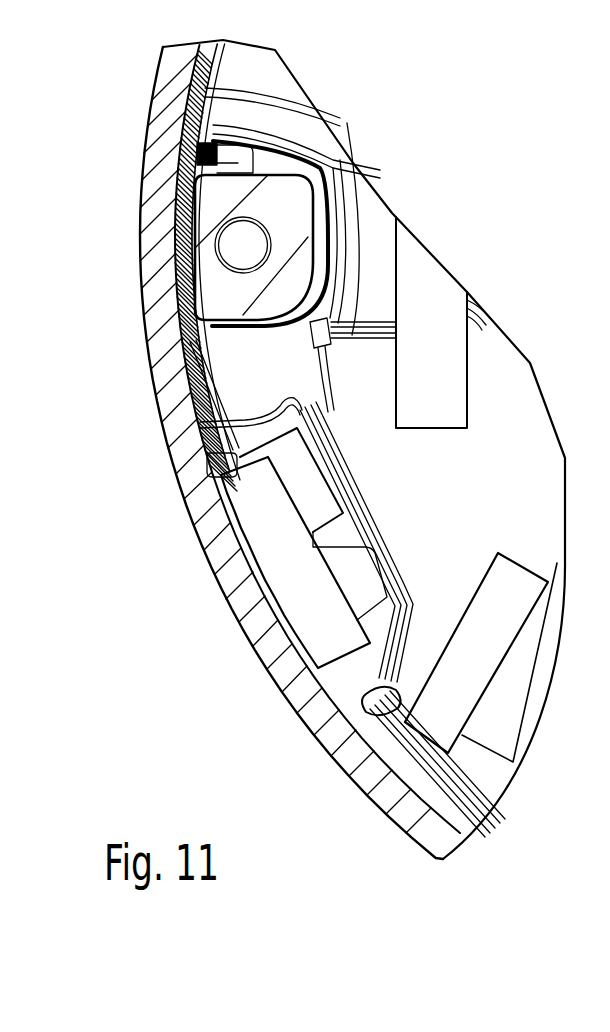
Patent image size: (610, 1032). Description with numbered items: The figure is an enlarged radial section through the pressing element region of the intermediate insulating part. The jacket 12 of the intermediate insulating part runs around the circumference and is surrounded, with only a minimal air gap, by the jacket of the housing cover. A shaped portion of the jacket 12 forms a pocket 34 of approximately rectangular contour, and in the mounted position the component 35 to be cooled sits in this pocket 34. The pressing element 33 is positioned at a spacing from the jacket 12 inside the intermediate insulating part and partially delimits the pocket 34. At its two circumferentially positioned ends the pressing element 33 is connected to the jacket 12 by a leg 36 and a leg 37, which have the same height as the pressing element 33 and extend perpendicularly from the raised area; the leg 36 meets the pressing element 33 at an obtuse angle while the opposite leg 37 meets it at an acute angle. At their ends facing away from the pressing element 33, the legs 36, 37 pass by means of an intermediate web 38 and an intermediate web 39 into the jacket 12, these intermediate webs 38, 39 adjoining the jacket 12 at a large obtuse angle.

The jacket 12 is at (180, 245).
The pressing element 33 is at (380, 553).
The pocket 34 is at (310, 503).
The component to be cooled 35 is at (285, 540).
The leg 36 is at (403, 745).
The leg 37 is at (250, 424).
The intermediate web 38 is at (372, 718).
The intermediate web 39 is at (190, 405).